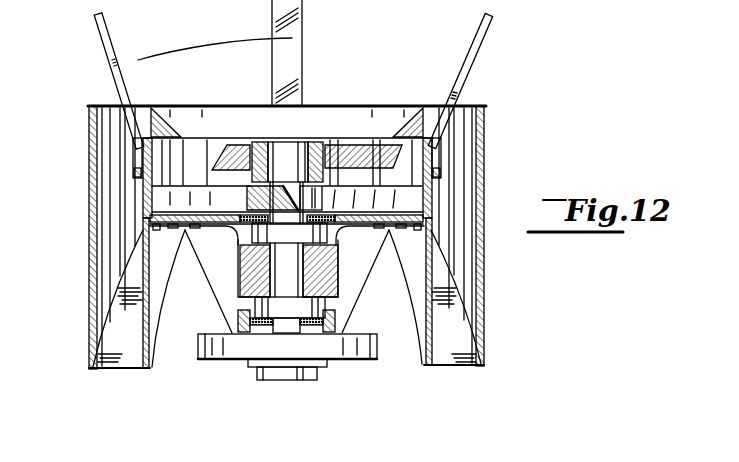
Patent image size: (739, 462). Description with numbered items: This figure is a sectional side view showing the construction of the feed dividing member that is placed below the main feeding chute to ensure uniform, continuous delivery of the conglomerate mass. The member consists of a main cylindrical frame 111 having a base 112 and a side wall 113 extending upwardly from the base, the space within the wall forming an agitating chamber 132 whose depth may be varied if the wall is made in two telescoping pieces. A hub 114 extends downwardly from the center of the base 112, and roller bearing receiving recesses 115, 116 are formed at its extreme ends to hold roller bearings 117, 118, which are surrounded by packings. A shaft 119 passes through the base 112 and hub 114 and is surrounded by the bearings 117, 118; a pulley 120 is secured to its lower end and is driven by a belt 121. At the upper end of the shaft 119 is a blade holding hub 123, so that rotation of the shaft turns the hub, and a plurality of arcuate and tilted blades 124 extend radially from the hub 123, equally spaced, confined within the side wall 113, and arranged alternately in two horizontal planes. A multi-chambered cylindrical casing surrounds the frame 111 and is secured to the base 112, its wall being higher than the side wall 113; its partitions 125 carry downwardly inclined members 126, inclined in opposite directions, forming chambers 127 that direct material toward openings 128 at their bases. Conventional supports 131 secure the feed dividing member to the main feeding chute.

The main cylindrical frame 111 is at (435, 173).
The base 112 is at (336, 232).
The side wall 113 is at (433, 141).
The hub 114 is at (248, 277).
The roller bearing receiving recess 115 is at (333, 234).
The roller bearing receiving recess 116 is at (337, 307).
The roller bearing 117 is at (236, 239).
The roller bearing 118 is at (250, 309).
The shaft 119 is at (293, 141).
The pulley 120 is at (226, 369).
The belt 121 is at (198, 362).
The blade holding hub 123 is at (261, 143).
The arcuate and tilted blades 124 is at (225, 146).
The partitions 125 is at (158, 110).
The downwardly inclined members 126 is at (118, 328).
The chambers 127 is at (113, 218).
The openings 128 is at (113, 368).
The supports 131 is at (132, 58).
The agitating chamber 132 is at (189, 146).